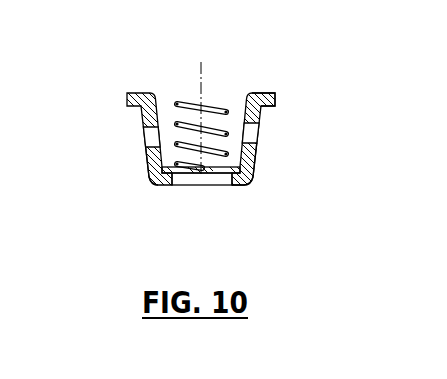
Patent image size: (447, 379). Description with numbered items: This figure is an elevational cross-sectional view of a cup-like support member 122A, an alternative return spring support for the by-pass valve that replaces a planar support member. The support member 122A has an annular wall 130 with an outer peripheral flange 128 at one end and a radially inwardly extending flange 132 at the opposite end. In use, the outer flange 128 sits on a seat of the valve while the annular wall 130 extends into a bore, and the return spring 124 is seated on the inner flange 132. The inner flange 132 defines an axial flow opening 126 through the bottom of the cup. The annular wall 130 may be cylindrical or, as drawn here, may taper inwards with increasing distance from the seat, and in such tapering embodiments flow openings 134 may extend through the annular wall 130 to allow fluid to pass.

The cup-like support member 122A is at (263, 99).
The return spring 124 is at (214, 103).
The axial flow opening 126 is at (212, 180).
The outer peripheral flange 128 is at (271, 105).
The annular wall 130 is at (148, 161).
The radially inwardly extending flange 132 is at (238, 184).
The flow openings 134 is at (148, 131).